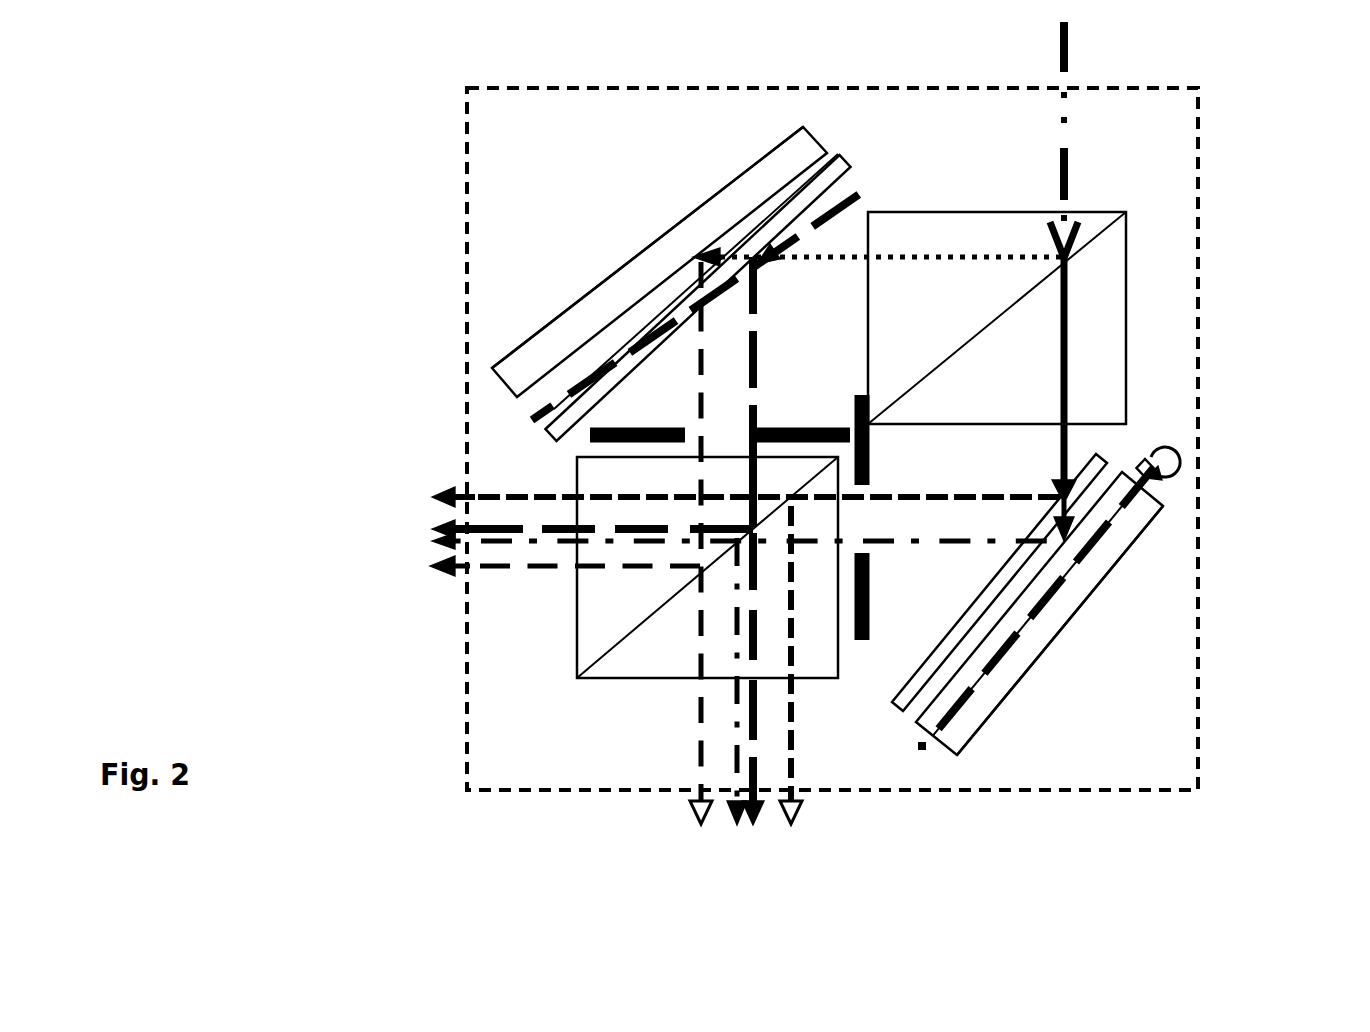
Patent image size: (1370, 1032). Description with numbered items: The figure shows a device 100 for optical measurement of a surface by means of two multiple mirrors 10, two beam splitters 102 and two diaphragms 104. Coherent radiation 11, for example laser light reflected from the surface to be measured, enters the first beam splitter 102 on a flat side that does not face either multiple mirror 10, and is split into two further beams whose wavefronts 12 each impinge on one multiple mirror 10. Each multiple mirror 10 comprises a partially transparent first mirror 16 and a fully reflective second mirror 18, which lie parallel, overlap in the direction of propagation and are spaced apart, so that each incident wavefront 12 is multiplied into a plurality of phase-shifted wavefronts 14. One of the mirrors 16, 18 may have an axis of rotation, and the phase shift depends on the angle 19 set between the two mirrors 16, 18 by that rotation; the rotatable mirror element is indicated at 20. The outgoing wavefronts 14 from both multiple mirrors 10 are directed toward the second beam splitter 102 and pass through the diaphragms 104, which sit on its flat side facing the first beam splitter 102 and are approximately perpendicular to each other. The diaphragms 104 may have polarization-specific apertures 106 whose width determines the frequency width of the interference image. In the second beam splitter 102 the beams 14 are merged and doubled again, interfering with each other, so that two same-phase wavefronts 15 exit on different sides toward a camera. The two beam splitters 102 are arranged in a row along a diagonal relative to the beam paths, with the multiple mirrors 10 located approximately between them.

The device for optical measurement of a surface 100 is at (362, 233).
The multiple mirror 10 is at (500, 320).
The electromagnetic radiation 11 is at (1064, 147).
The wavefront 12 is at (917, 255).
The wavefronts 14 is at (700, 330).
The wavefronts 15 is at (445, 562).
The first mirror 16 is at (762, 232).
The second mirror 18 is at (710, 208).
The angle 19 is at (828, 198).
The rotatable grating element 20 is at (1190, 455).
The beam splitter 102 is at (1085, 270).
The diaphragm 104 is at (592, 436).
The aperture 106 is at (866, 510).